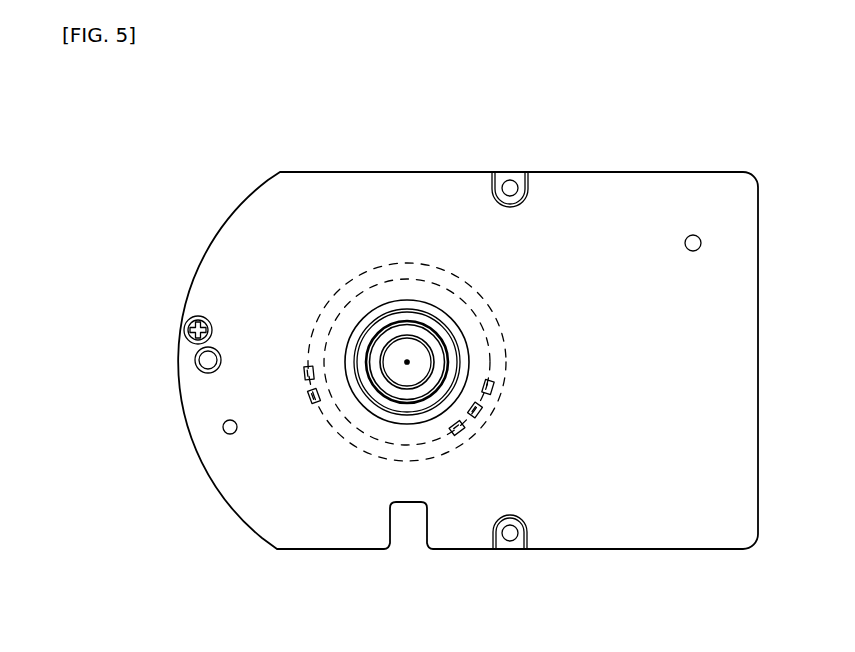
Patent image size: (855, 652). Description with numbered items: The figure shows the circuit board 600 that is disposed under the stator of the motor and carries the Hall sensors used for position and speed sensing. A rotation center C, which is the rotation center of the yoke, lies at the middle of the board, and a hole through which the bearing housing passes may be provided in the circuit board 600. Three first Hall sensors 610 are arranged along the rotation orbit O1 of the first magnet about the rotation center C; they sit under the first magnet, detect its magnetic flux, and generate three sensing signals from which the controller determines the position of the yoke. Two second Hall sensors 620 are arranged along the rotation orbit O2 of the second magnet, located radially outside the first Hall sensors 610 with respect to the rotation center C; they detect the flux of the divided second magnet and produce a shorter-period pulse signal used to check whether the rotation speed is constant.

The circuit board 600 is at (306, 160).
The rotation center C is at (407, 362).
The rotation orbit of the first magnet O1 is at (333, 423).
The rotation orbit of the second magnet O2 is at (352, 445).
The first Hall sensor 610 is at (498, 385).
The second Hall sensor 620 is at (304, 372).